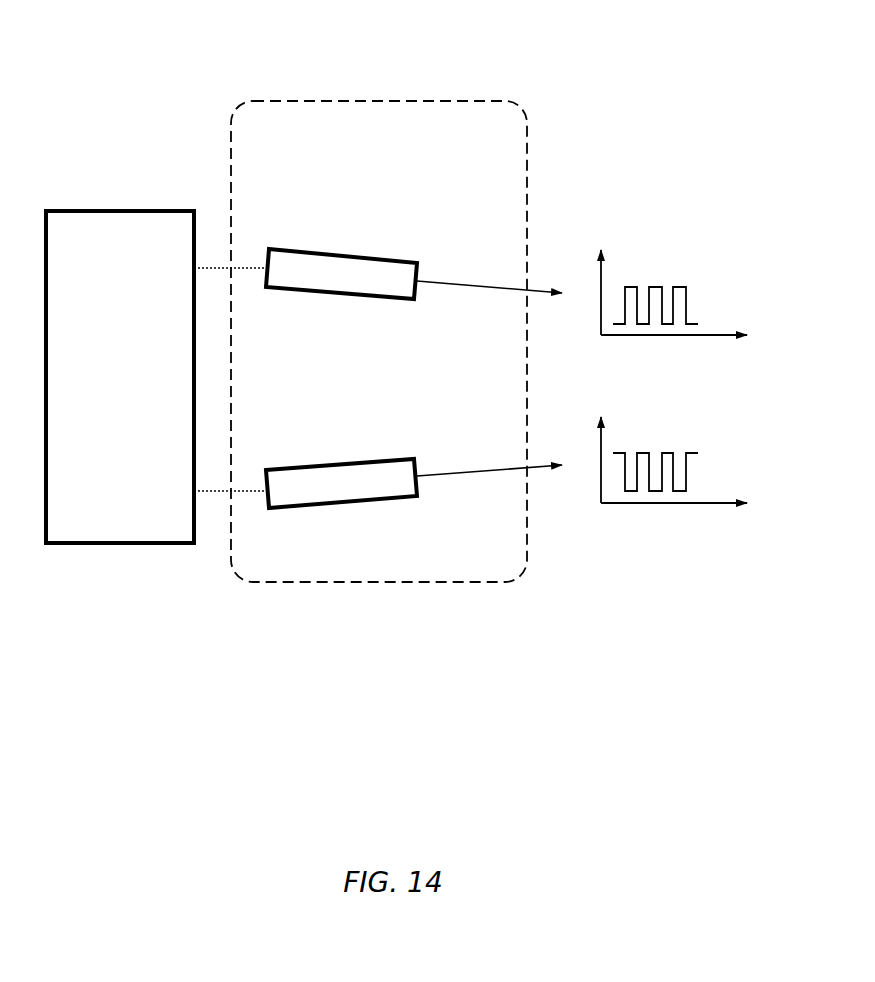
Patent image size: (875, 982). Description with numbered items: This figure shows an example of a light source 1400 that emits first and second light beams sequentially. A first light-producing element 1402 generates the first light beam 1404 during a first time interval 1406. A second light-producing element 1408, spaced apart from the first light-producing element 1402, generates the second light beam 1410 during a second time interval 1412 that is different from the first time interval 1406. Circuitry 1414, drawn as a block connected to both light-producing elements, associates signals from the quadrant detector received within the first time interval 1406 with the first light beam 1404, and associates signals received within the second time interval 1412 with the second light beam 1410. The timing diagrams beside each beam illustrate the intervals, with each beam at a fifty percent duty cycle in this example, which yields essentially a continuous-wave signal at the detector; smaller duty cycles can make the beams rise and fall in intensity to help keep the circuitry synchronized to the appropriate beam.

The imaging module 1400 is at (382, 100).
The first light-producing element 1402 is at (347, 252).
The first light beam 1404 is at (474, 285).
The first time interval 1406 is at (659, 287).
The second light-producing element 1408 is at (346, 462).
The second light beam 1410 is at (476, 471).
The second time interval 1412 is at (670, 453).
The circuitry 1414 is at (123, 210).